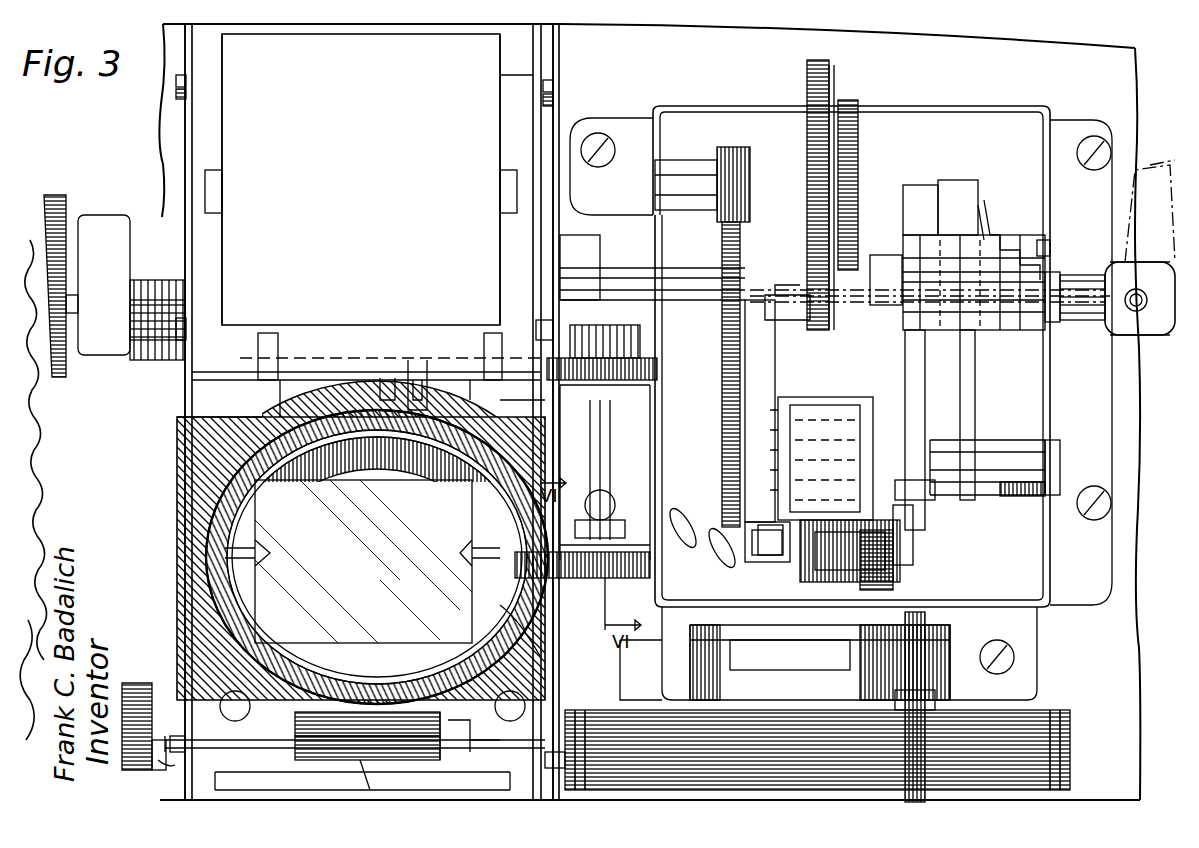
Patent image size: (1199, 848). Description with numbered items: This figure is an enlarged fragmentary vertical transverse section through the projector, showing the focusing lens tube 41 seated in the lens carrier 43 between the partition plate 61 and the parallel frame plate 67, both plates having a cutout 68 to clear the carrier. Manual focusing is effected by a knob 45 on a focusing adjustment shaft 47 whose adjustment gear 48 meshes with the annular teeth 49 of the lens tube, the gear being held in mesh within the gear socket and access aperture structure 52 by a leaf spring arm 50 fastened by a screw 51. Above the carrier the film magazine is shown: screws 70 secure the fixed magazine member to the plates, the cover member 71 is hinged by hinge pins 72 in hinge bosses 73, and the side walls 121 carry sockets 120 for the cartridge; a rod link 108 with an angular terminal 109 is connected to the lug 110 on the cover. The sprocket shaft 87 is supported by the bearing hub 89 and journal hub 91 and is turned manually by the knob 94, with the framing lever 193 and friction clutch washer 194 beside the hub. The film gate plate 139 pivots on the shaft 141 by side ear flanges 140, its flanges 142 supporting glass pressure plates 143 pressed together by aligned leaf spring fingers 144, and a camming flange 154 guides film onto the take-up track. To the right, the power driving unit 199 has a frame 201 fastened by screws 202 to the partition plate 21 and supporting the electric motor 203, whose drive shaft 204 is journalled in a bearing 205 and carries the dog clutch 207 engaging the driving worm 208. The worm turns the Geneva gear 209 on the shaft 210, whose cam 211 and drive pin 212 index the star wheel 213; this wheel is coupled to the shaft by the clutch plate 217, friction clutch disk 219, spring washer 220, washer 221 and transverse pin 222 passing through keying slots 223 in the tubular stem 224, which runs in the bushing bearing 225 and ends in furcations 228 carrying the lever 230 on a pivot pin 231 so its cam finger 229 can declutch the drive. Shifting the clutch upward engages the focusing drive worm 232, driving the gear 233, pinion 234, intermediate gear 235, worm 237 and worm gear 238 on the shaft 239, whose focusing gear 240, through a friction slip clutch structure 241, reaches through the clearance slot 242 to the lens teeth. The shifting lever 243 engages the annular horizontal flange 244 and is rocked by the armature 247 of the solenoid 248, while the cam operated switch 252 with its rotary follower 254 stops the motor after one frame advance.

The partition plate 21 is at (1128, 705).
The lens tube 41 is at (455, 482).
The lens carrier 43 is at (205, 448).
The knob 45 is at (135, 683).
The focusing adjustment shaft 47 is at (215, 742).
The adjustment gear 48 is at (340, 712).
The annular teeth 49 is at (542, 655).
The leaf spring arm 50 is at (380, 750).
The screw 51 is at (370, 775).
The gear socket and access aperture structure 52 is at (470, 745).
The partition plate 61 is at (548, 700).
The frame plate 67 is at (185, 163).
The cutout 68 is at (195, 407).
The screws 70 is at (176, 83).
The cover member 71 is at (385, 116).
The hinge pins 72 is at (265, 358).
The hinge bosses 73 is at (265, 340).
The shaft 87 is at (612, 290).
The bearing hub 89 is at (152, 330).
The journal hub 91 is at (572, 252).
The knob 94 is at (60, 195).
The rod link 108 is at (400, 362).
The angular terminal 109 is at (414, 360).
The lug 110 is at (420, 395).
The sockets 120 is at (222, 180).
The side walls 121 is at (212, 128).
The film gate plate 139 is at (200, 749).
The side ear flanges 140 is at (225, 778).
The shaft 141 is at (158, 765).
The flanges 142 is at (392, 482).
The glass pressure plates 143 is at (285, 510).
The leaf spring fingers 144 is at (260, 545).
The camming flange 154 is at (479, 757).
The framing lever 193 is at (108, 313).
The friction clutch washer 194 is at (136, 215).
The power driving unit 199 is at (1068, 628).
The frame 201 is at (1040, 640).
The screws 202 is at (600, 135).
The electric motor 203 is at (1010, 725).
The drive shaft 204 is at (858, 582).
The bearing 205 is at (840, 88).
The dog clutch 207 is at (770, 310).
The driving worm 208 is at (806, 458).
The Geneva gear 209 is at (785, 565).
The shaft 210 is at (1000, 440).
The cam 211 is at (920, 540).
The drive pin 212 is at (925, 400).
The star wheel 213 is at (955, 185).
The clutch plate 217 is at (988, 200).
The friction clutch disk 219 is at (945, 192).
The spring washer 220 is at (1000, 235).
The washer 221 is at (1012, 250).
The transverse pin 222 is at (1000, 350).
The keying slots 223 is at (1030, 265).
The tubular stem 224 is at (1058, 272).
The bushing bearing 225 is at (1048, 240).
The furcations 228 is at (1120, 330).
The cam finger 229 is at (1125, 335).
The lever 230 is at (1150, 168).
The pivot pin 231 is at (1128, 310).
The focusing drive worm 232 is at (858, 150).
The gear 233 is at (805, 72).
The pinion 234 is at (745, 138).
The intermediate gear 235 is at (722, 238).
The worm 237 is at (568, 395).
The worm gear 238 is at (650, 368).
The shaft 239 is at (610, 480).
The focusing gear 240 is at (690, 530).
The friction slip clutch structure 241 is at (623, 600).
The clearance slot 242 is at (545, 585).
The shifting lever 243 is at (878, 262).
The annular horizontal flange 244 is at (722, 330).
The armature 247 is at (770, 395).
The solenoid 248 is at (910, 488).
The cam operated switch 252 is at (712, 520).
The rotary follower 254 is at (766, 525).